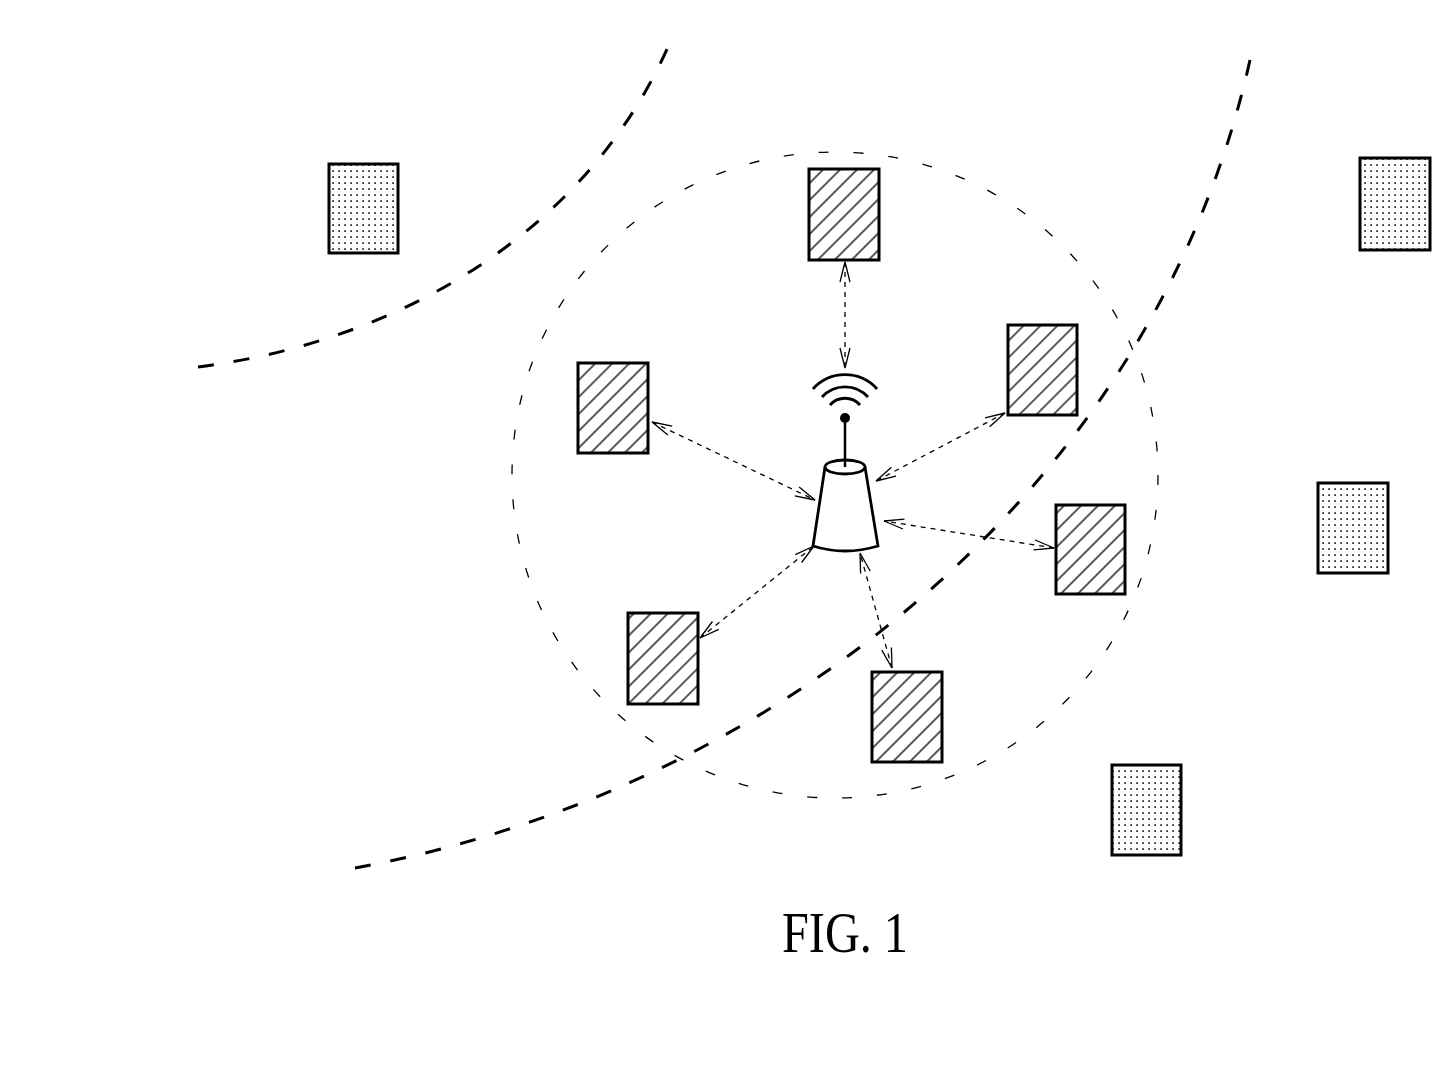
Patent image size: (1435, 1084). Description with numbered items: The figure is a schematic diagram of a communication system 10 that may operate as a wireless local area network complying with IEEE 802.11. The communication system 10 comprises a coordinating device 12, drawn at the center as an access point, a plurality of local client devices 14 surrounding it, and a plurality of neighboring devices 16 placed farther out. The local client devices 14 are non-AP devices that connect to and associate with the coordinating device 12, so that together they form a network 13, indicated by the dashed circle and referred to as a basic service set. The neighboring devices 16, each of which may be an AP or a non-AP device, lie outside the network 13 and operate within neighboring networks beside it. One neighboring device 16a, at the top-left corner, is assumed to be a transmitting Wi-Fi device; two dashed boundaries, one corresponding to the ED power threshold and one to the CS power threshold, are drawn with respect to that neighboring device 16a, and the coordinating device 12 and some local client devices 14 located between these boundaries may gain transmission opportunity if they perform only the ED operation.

The communication system 10 is at (198, 106).
The coordinating device 12 is at (818, 488).
The network 13 is at (974, 180).
The local client devices 14 is at (808, 224).
The neighboring devices 16 is at (873, 471).
The neighboring device 16a is at (362, 162).